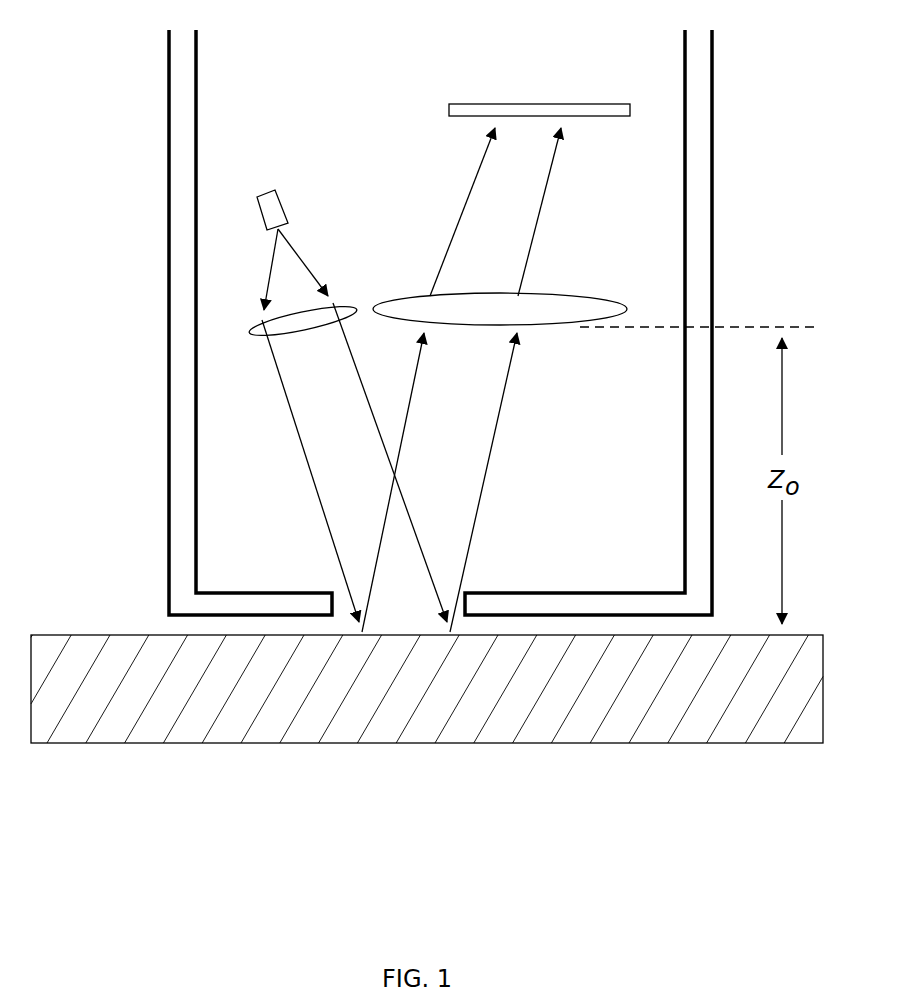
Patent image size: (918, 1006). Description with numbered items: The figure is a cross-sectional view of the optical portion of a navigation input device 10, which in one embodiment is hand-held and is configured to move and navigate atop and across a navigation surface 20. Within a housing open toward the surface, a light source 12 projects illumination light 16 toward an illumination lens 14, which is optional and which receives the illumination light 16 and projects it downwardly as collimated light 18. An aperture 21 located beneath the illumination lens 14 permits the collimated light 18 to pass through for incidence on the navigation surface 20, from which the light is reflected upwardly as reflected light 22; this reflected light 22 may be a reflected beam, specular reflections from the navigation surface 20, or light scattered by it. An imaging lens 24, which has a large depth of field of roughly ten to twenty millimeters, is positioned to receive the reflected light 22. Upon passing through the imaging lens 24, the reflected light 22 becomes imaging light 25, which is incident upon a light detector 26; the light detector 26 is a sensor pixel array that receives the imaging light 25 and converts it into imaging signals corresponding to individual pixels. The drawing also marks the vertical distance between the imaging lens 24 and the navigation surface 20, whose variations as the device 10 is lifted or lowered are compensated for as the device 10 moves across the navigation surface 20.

The navigation input device 10 is at (788, 60).
The light source 12 is at (283, 203).
The illumination lens 14 is at (255, 333).
The illumination light 16 is at (268, 283).
The collimated light 18 is at (298, 432).
The navigation surface 20 is at (90, 635).
The aperture 21 is at (432, 605).
The reflected light 22 is at (409, 395).
The imaging lens 24 is at (553, 324).
The imaging light 25 is at (533, 245).
The light detector 26 is at (527, 104).